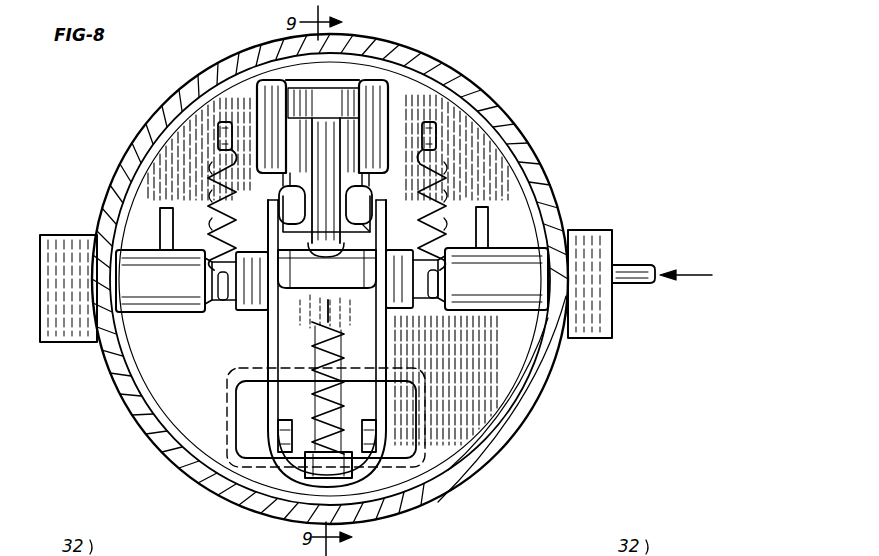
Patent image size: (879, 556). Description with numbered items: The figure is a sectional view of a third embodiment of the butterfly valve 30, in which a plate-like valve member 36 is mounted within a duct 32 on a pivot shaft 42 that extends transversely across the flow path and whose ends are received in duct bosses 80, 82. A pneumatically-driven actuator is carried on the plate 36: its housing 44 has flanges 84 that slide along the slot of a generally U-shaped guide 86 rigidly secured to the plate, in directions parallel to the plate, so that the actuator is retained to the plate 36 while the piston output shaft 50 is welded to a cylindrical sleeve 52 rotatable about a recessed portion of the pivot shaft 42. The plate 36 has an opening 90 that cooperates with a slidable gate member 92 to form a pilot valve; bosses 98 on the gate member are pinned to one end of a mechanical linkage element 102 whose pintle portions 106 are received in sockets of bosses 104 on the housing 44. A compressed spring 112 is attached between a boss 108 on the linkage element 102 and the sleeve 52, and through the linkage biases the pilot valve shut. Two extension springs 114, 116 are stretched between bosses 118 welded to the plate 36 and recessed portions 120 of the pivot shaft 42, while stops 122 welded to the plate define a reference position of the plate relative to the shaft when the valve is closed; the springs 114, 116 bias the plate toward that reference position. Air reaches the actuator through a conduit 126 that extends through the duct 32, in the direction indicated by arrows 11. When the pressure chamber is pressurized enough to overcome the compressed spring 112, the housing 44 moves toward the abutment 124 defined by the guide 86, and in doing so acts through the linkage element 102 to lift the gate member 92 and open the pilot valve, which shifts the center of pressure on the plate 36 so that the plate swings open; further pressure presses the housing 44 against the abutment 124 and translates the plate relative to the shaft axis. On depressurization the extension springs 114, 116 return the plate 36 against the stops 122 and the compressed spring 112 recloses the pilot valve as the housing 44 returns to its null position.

The direction arrows 11 is at (241, 140).
The butterfly valve 30 is at (102, 388).
The duct 32 is at (144, 418).
The plate-like valve member 36 is at (478, 434).
The pivot shaft 42 is at (490, 310).
The housing 44 is at (322, 126).
The output shaft 50 is at (372, 226).
The cylindrical sleeve 52 is at (327, 269).
The duct boss 80 is at (66, 236).
The duct boss 82 is at (592, 230).
The flanges 84 is at (325, 187).
The U-shaped guide 86 is at (388, 96).
The opening 90 is at (228, 394).
The gate member 92 is at (242, 408).
The bosses 98 is at (290, 440).
The linkage element 102 is at (388, 366).
The bosses 104 is at (210, 198).
The pintle portions 106 is at (430, 208).
The boss 108 is at (326, 478).
The compressed spring 112 is at (312, 342).
The extension spring 114 is at (220, 126).
The extension spring 116 is at (434, 134).
The bosses 118 is at (464, 90).
The recessed portions 120 is at (192, 281).
The stops 122 is at (160, 216).
The abutment 124 is at (350, 92).
The conduit 126 is at (642, 266).